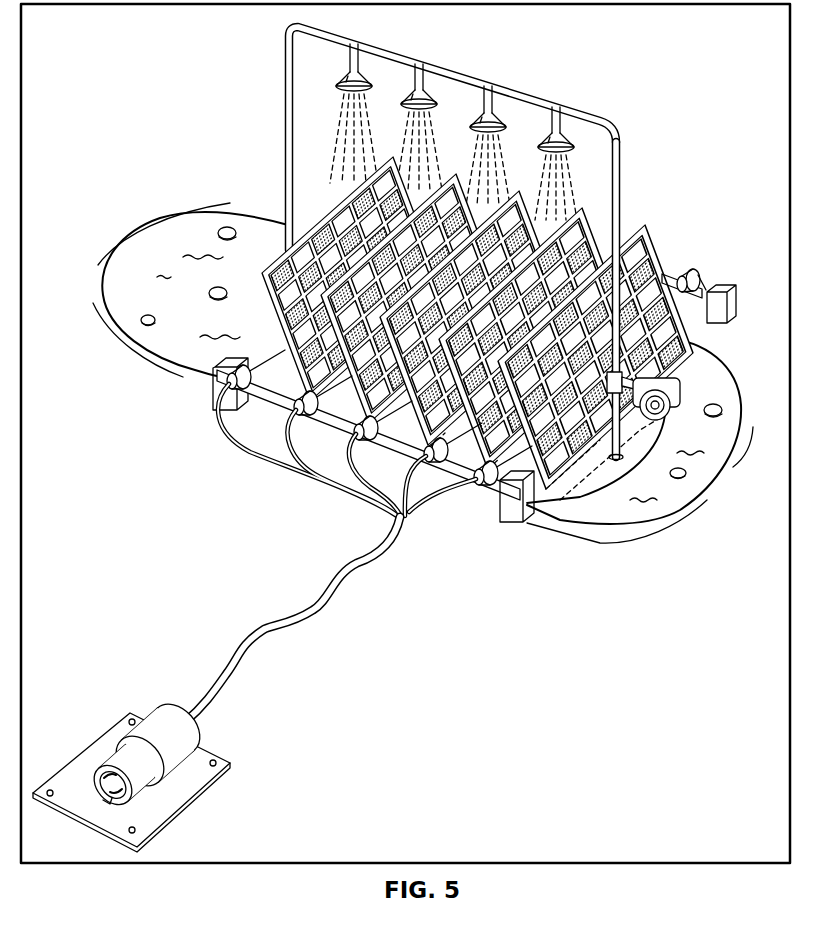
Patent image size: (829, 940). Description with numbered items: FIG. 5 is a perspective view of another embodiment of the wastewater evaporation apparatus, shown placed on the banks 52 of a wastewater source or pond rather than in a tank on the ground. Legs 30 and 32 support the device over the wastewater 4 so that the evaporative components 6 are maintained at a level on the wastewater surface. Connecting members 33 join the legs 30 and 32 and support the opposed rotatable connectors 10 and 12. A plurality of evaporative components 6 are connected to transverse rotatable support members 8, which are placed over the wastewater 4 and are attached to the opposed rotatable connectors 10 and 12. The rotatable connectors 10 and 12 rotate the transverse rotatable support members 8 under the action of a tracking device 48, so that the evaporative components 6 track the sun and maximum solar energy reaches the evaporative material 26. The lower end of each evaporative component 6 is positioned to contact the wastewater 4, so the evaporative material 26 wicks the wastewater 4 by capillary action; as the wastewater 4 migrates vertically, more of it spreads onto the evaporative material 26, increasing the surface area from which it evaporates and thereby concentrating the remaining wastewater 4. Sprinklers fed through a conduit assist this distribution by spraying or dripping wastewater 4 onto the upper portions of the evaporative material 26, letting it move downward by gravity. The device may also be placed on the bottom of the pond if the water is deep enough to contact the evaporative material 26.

The wastewater 4 is at (713, 377).
The evaporative component 6 is at (262, 278).
The transverse rotatable support member 8 is at (727, 293).
The rotatable connector 10 is at (720, 258).
The rotatable connector 12 is at (487, 477).
The evaporative material 26 is at (668, 273).
The leg 30 is at (510, 497).
The leg 32 is at (222, 384).
The connecting member 33 is at (677, 280).
The tracking device 48 is at (427, 64).
The banks 52 is at (245, 213).